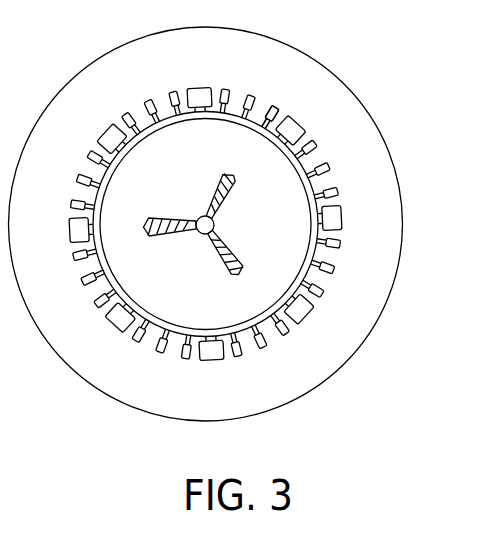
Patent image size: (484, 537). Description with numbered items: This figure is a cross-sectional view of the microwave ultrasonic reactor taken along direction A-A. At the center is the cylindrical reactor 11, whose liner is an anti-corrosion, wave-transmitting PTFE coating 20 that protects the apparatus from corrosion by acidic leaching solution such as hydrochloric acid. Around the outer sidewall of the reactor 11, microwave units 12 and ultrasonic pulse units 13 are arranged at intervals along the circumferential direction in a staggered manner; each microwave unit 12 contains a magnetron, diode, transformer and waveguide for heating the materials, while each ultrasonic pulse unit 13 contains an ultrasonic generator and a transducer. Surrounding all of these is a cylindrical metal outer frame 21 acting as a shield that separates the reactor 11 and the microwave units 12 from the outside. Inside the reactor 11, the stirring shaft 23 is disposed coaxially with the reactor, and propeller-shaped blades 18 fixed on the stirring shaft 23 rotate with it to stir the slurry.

The reactor 11 is at (324, 230).
The microwave unit 12 is at (342, 210).
The ultrasonic pulse unit 13 is at (269, 100).
The blades 18 is at (237, 273).
The PTFE coating 20 is at (315, 300).
The outer frame 21 is at (387, 143).
The stirring shaft 23 is at (203, 233).